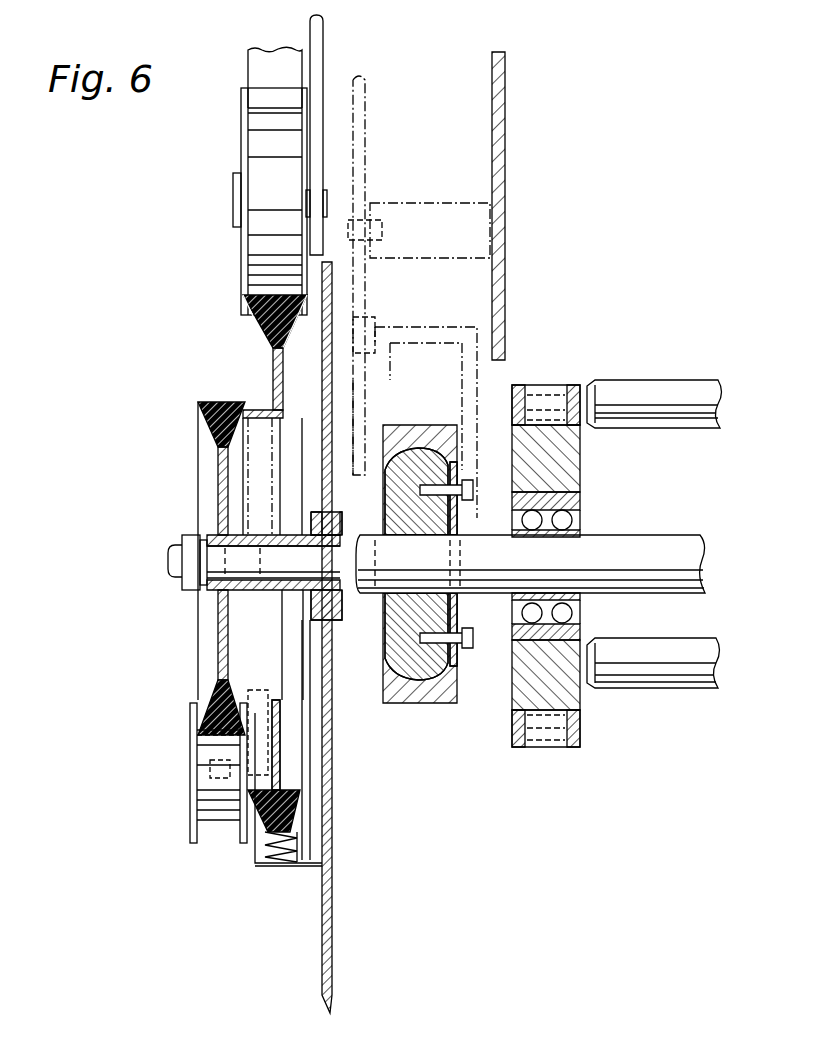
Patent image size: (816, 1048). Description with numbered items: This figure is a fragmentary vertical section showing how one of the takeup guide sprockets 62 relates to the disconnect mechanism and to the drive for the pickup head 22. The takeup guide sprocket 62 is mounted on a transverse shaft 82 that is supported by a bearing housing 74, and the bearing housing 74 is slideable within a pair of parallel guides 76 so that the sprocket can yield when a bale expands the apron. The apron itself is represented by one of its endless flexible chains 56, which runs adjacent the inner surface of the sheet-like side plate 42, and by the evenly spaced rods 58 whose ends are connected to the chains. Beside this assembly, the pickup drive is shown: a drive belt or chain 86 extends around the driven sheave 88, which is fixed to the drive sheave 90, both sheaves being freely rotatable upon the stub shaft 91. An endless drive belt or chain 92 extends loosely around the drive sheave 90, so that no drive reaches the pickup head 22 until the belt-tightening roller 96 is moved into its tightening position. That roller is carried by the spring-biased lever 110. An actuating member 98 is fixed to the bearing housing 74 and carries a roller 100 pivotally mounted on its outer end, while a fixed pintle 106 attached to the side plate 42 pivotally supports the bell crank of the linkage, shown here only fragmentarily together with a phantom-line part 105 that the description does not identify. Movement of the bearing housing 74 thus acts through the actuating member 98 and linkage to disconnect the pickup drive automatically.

The pickup head 22 is at (333, 920).
The side plate 42 is at (505, 112).
The endless flexible chain 56 is at (570, 385).
The rod 58 is at (655, 380).
The takeup guide sprocket 62 is at (580, 465).
The bearing housing 74 is at (385, 650).
The parallel guide 76 is at (418, 425).
The transverse shaft 82 is at (660, 536).
The drive belt or chain 86 is at (192, 720).
The driven sheave 88 is at (218, 480).
The drive sheave 90 is at (273, 355).
The stub shaft 91 is at (178, 560).
The endless drive belt or chain 92 is at (300, 296).
The belt-tightening roller 96 is at (258, 145).
The actuating member 98 is at (445, 328).
The roller 100 is at (375, 325).
The phantom arm 105 is at (366, 395).
The fixed pintle 106 is at (380, 210).
The spring-biased lever 110 is at (323, 52).